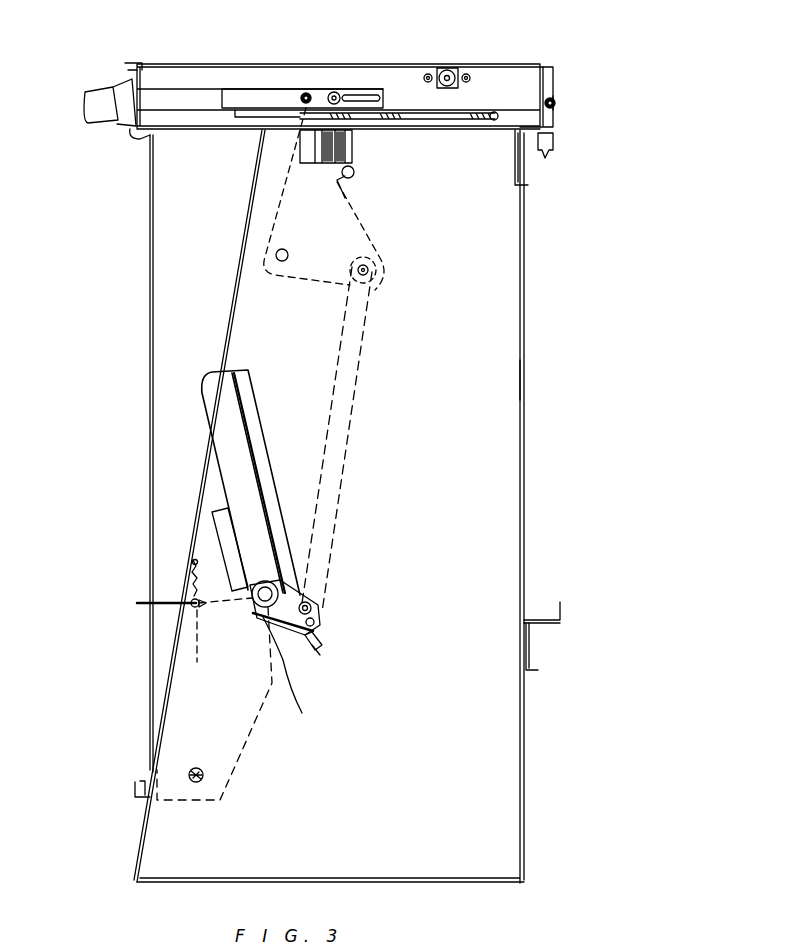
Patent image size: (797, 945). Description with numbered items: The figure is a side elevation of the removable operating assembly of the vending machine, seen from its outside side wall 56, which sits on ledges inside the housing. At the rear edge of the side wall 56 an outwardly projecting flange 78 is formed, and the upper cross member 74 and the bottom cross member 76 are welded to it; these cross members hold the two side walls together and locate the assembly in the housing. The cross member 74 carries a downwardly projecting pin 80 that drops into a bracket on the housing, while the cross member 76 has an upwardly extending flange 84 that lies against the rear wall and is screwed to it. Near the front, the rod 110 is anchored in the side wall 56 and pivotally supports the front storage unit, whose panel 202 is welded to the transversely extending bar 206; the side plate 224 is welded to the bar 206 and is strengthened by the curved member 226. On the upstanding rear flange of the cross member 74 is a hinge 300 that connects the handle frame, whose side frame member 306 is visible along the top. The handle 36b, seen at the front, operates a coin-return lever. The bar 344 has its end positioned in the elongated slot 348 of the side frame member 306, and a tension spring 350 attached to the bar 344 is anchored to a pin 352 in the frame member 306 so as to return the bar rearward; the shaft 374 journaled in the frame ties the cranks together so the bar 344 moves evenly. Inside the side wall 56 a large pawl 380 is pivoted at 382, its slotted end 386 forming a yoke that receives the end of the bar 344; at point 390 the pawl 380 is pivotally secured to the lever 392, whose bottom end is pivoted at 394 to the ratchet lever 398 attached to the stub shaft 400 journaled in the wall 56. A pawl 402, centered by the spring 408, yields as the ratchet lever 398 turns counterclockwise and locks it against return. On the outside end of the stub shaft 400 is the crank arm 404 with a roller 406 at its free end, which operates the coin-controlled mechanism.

The handle 36b is at (84, 104).
The side wall 56 is at (512, 760).
The cross member 74 is at (520, 168).
The cross member 76 is at (530, 648).
The outwardly projecting flange 78 is at (518, 380).
The downwardly projecting pin 80 is at (550, 155).
The upwardly extending flange 84 is at (562, 611).
The rod 110 is at (203, 773).
The panel 202 is at (160, 410).
The transversely extending bar 206 is at (150, 605).
The side plate 224 is at (162, 654).
The curved member 226 is at (133, 792).
The hinge 300 is at (556, 103).
The side frame member 306 is at (182, 80).
The bar 344 is at (306, 100).
The elongated slot 348 is at (240, 115).
The tension spring 350 is at (450, 121).
The pin 352 is at (498, 113).
The shaft 374 is at (447, 70).
The pawl 380 is at (372, 214).
The pivot 382 is at (275, 255).
The slot 386 is at (355, 130).
The pivot point 390 is at (378, 273).
The lever 392 is at (360, 378).
The pivot 394 is at (320, 652).
The ratchet lever 398 is at (215, 545).
The stub shaft 400 is at (262, 613).
The pawl 402 is at (216, 643).
The crank arm 404 is at (299, 671).
The roller 406 is at (312, 608).
The spring 408 is at (190, 577).